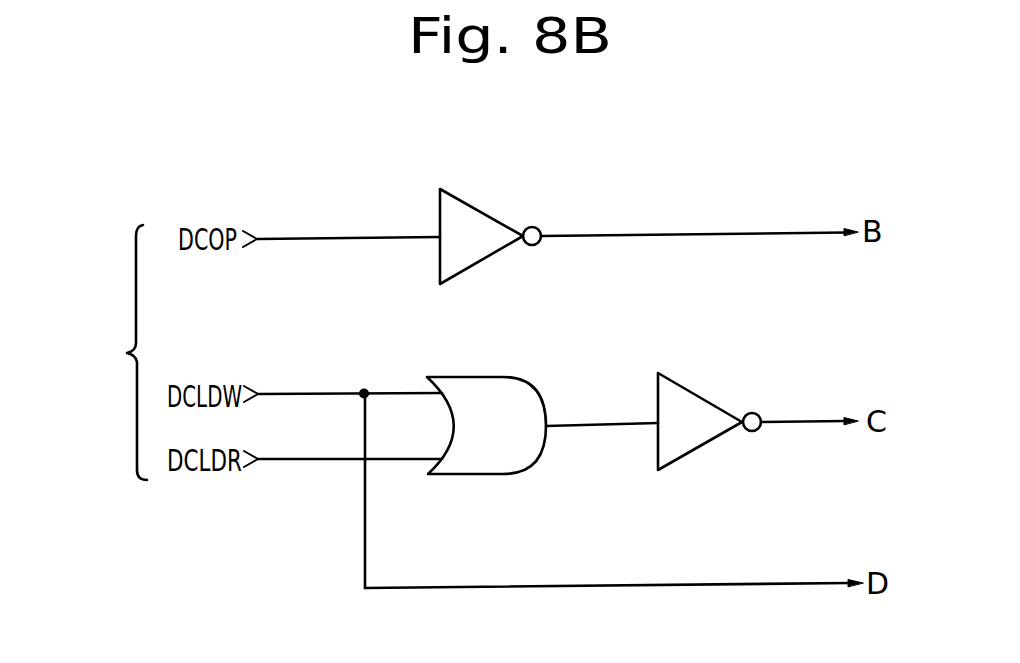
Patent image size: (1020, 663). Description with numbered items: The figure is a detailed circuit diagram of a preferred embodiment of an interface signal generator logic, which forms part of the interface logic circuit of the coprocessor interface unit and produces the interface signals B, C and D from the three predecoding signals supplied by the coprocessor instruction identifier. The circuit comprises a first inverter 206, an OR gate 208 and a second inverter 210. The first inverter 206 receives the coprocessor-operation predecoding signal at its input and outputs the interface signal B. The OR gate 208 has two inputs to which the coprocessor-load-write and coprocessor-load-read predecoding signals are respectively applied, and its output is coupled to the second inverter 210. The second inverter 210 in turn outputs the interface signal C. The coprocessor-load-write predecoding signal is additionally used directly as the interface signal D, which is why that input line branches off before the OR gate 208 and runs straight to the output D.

The first inverter 206 is at (483, 210).
The OR gate 208 is at (498, 375).
The second inverter 210 is at (701, 395).